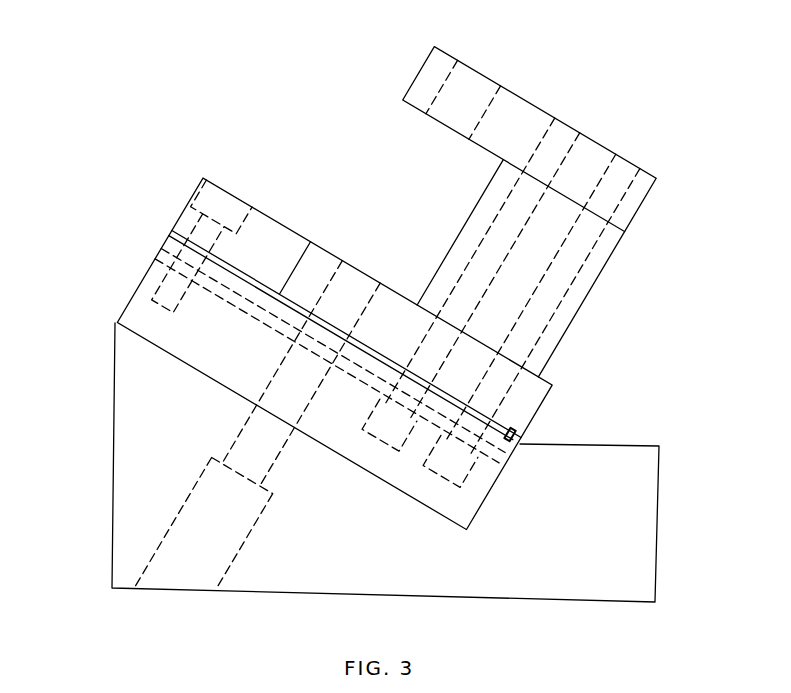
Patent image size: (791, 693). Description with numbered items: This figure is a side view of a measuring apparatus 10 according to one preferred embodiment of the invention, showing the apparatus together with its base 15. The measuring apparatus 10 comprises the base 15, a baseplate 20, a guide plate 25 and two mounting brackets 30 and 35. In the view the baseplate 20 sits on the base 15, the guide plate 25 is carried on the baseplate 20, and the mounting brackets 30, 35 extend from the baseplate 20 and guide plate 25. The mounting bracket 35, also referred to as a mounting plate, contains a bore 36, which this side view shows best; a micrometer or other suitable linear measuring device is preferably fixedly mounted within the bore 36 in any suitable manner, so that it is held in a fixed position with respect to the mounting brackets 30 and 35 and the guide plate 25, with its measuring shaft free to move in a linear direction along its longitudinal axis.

The measuring apparatus 10 is at (189, 120).
The base 15 is at (127, 458).
The baseplate 20 is at (133, 303).
The guide plate 25 is at (188, 203).
The mounting bracket 30 is at (570, 303).
The mounting bracket 35 is at (520, 115).
The bore 36 is at (462, 92).